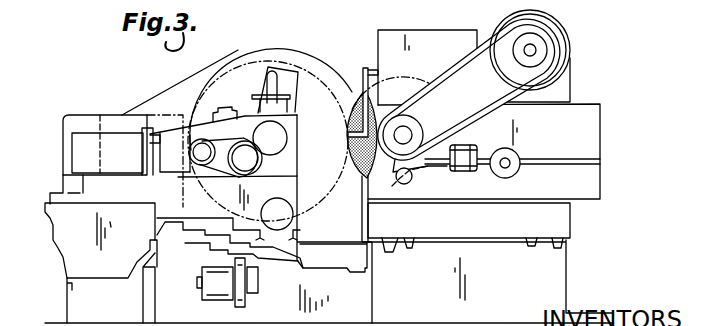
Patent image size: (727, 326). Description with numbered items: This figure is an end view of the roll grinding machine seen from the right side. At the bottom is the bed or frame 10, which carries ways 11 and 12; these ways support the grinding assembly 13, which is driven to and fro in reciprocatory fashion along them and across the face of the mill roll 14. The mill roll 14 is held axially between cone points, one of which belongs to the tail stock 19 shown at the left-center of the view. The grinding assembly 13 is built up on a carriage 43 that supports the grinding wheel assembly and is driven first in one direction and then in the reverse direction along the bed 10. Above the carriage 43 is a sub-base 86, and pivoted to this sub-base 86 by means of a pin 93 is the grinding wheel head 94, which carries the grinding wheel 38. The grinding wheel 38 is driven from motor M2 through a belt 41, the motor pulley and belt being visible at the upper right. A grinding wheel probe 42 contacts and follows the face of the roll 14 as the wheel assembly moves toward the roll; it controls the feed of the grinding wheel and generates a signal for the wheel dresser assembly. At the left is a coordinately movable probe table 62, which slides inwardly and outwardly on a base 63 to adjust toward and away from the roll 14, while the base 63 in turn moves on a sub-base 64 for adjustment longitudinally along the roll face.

The probe table 62 is at (68, 119).
The base 63 is at (62, 237).
The sub-base 64 is at (75, 298).
The tail stock 19 is at (247, 125).
The grinding wheel 38 is at (270, 135).
The mill roll 14 is at (320, 200).
The grinding wheel probe 42 is at (362, 78).
The belt 41 is at (489, 48).
The motor M2 is at (556, 32).
The grinding assembly 13 is at (600, 96).
The grinding wheel head 94 is at (588, 134).
The sub-base 86 is at (570, 185).
The carriage 43 is at (552, 221).
The pin 93 is at (413, 178).
The way 12 is at (401, 244).
The way 11 is at (545, 244).
The bed 10 is at (414, 306).